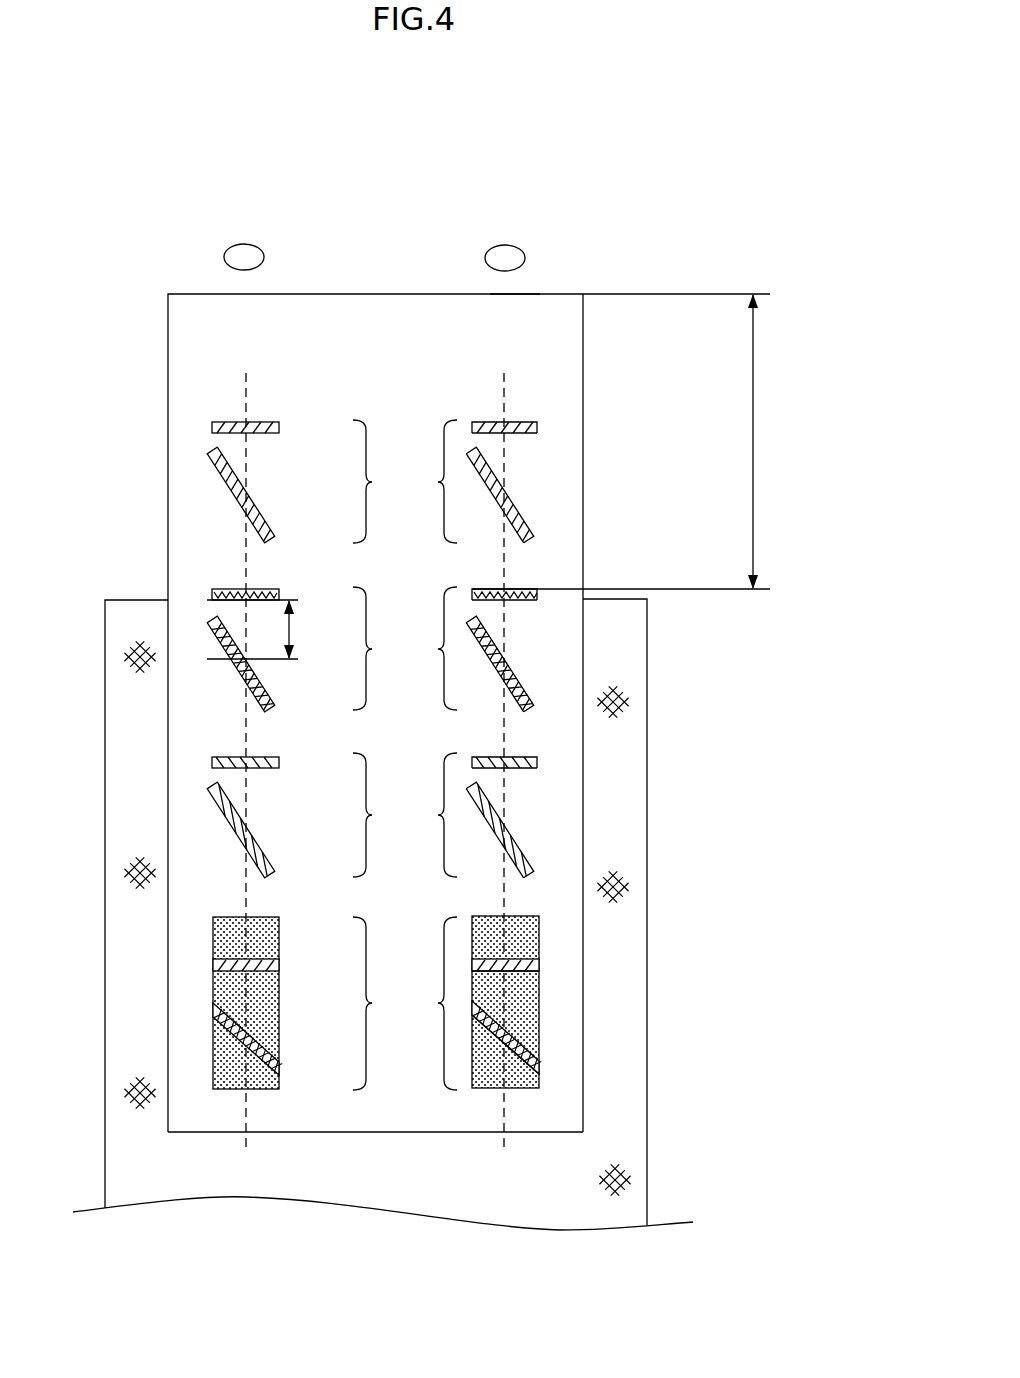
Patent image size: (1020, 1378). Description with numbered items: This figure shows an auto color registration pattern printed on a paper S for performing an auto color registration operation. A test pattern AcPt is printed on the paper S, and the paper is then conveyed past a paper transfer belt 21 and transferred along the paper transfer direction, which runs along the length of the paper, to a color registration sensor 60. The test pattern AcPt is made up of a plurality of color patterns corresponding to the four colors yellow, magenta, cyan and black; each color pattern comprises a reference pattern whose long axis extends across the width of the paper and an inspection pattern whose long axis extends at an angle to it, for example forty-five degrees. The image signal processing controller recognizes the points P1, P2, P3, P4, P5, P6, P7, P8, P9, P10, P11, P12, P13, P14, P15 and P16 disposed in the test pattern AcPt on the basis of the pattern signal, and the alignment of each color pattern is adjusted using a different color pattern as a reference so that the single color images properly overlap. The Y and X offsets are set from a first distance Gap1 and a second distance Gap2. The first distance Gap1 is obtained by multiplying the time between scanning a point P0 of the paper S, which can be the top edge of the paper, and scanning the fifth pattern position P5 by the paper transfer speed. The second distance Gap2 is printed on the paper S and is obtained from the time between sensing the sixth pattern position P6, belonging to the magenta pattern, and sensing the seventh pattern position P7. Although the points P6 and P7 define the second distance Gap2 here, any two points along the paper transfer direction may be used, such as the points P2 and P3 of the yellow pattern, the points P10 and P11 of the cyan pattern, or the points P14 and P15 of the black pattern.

The color registration sensor 60 is at (490, 247).
The paper S is at (187, 343).
The paper transfer belt 21 is at (120, 754).
The point P0 is at (512, 293).
The point P1 is at (512, 421).
The point P2 is at (512, 436).
The point P3 is at (512, 492).
The point P4 is at (512, 514).
The fifth pattern position P5 is at (512, 587).
The sixth pattern position P6 is at (512, 602).
The seventh pattern position P7 is at (512, 660).
The point P8 is at (512, 682).
The point P9 is at (512, 753).
The point P10 is at (512, 769).
The point P11 is at (512, 826).
The point P12 is at (512, 848).
The point P13 is at (512, 957).
The point P14 is at (512, 972).
The point P15 is at (512, 1030).
The point P16 is at (512, 1051).
The first distance Gap1 is at (646, 442).
The second distance Gap2 is at (282, 629).
The test pattern AcPt is at (405, 1072).